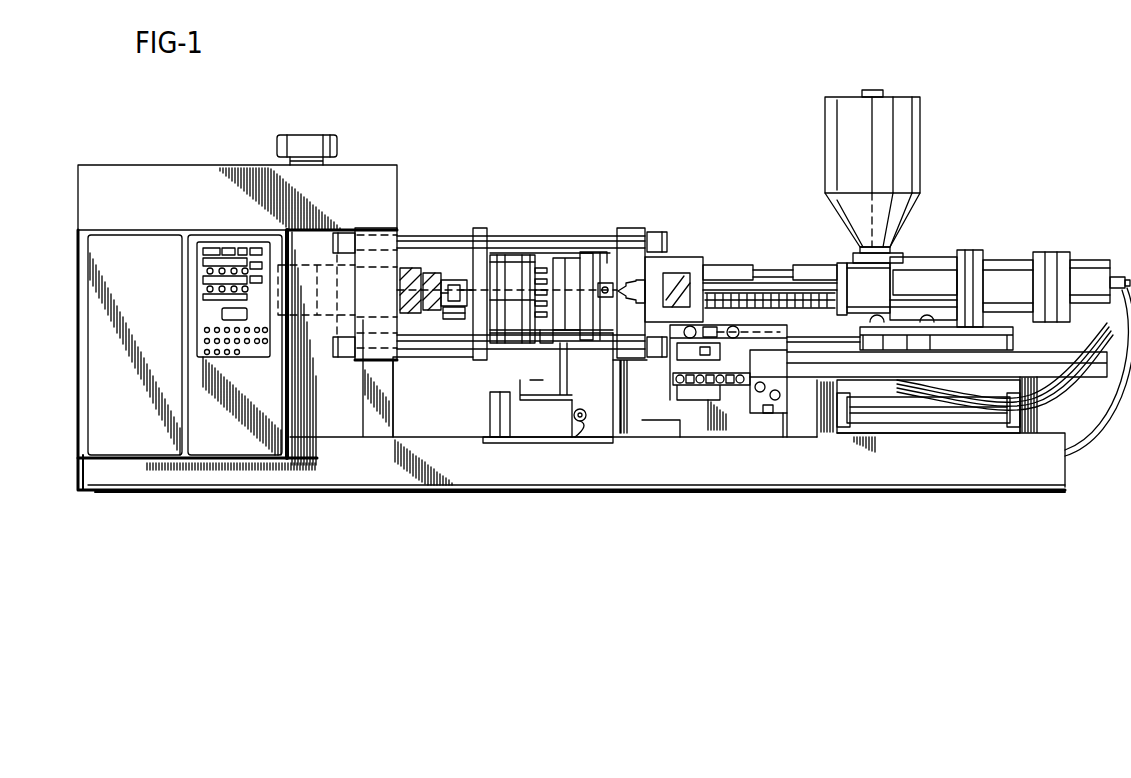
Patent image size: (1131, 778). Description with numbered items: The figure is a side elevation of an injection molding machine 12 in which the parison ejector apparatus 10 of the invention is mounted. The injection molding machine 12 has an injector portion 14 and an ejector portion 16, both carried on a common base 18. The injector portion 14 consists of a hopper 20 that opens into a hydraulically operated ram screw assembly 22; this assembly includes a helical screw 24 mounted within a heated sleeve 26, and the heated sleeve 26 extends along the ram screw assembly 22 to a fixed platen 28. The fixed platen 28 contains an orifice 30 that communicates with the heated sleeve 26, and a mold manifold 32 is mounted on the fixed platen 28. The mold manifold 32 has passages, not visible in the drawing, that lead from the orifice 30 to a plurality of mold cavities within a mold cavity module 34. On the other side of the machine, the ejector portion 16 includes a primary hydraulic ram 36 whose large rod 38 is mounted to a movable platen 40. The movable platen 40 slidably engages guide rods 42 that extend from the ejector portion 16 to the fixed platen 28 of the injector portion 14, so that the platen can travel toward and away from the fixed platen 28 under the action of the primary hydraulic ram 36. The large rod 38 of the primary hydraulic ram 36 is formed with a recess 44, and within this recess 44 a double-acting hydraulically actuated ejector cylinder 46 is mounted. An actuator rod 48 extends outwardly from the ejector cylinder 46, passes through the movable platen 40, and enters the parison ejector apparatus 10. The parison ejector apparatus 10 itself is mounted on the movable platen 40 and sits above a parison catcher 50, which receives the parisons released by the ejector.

The parison ejector apparatus 10 is at (523, 256).
The injection molding machine 12 is at (592, 497).
The injector portion 14 is at (696, 247).
The ejector portion 16 is at (441, 198).
The base 18 is at (770, 470).
The hopper 20 is at (898, 137).
The ram screw assembly 22 is at (770, 272).
The helical screw 24 is at (781, 287).
The heated sleeve 26 is at (722, 268).
The fixed platen 28 is at (627, 235).
The orifice 30 is at (620, 293).
The mold manifold 32 is at (600, 253).
The mold cavity module 34 is at (572, 265).
The primary hydraulic ram 36 is at (411, 270).
The large rod 38 is at (420, 320).
The movable platen 40 is at (480, 232).
The guide rods 42 is at (462, 235).
The recess 44 is at (448, 283).
The ejector cylinder 46 is at (400, 290).
The actuator rod 48 is at (463, 322).
The parison catcher 50 is at (490, 417).